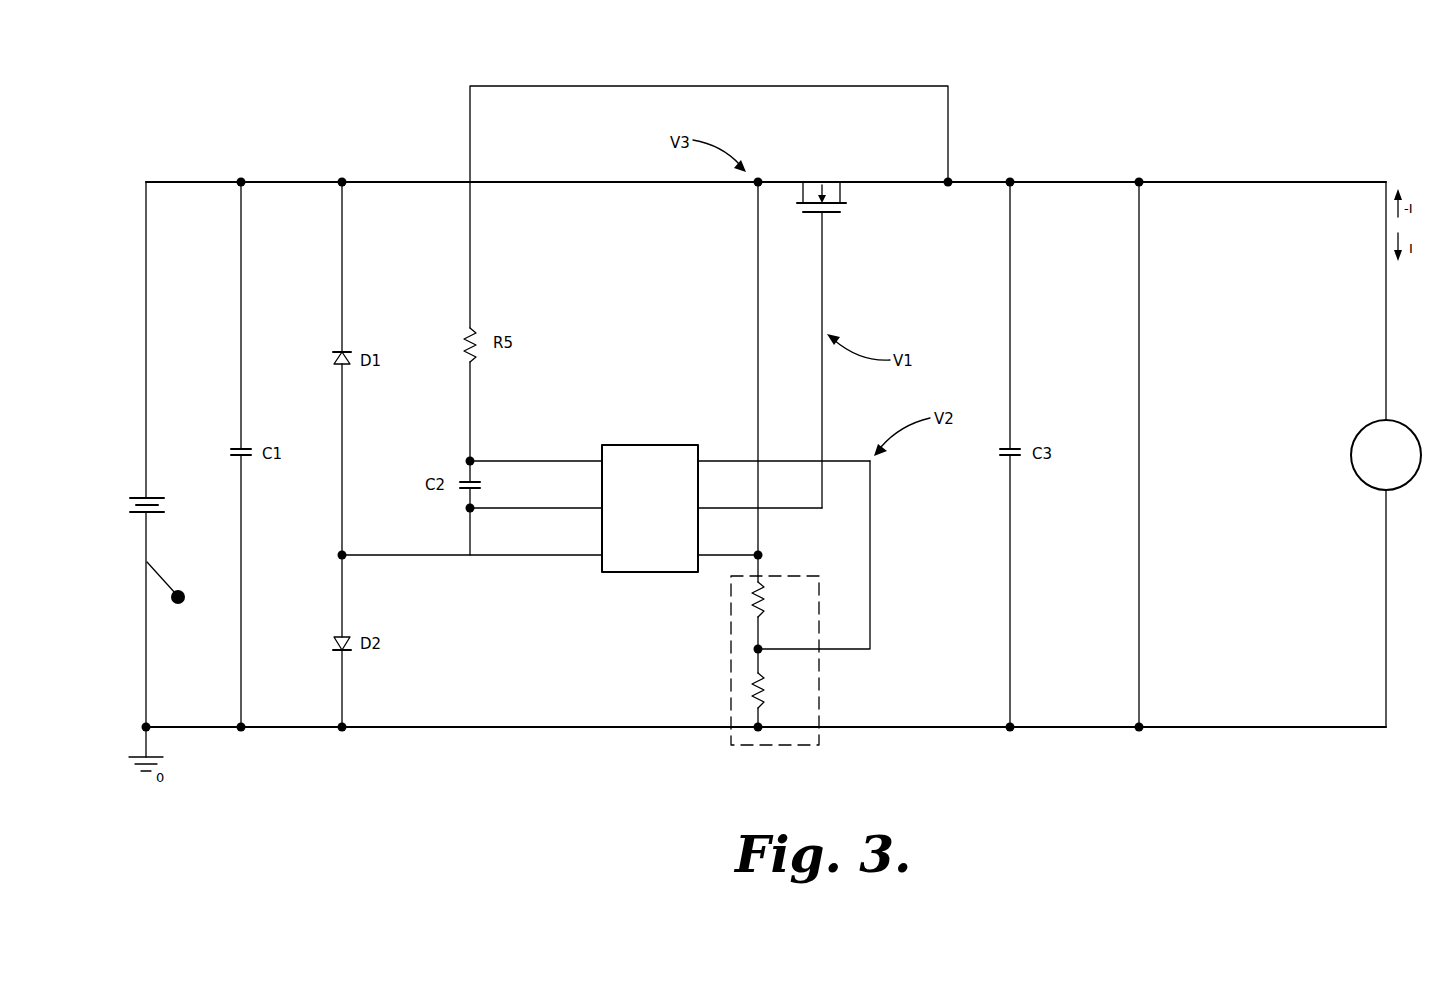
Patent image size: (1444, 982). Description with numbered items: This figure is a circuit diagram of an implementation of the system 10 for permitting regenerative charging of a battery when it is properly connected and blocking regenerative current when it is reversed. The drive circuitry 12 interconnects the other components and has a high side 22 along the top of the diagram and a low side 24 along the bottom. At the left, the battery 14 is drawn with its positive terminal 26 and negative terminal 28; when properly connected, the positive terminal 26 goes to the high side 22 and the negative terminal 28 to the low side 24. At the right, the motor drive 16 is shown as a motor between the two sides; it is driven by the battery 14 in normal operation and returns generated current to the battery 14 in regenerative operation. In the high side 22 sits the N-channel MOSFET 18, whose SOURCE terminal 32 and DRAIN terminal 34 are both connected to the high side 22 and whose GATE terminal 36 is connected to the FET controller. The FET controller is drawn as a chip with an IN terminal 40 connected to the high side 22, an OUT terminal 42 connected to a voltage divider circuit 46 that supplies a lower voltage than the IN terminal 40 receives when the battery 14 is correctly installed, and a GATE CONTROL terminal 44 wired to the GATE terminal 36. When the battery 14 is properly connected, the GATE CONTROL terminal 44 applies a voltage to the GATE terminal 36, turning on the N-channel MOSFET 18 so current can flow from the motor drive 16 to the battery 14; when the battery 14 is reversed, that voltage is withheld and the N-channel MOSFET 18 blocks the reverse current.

The system 10 is at (1236, 62).
The drive circuitry 12 is at (1073, 158).
The battery 14 is at (158, 454).
The motor drive 16 is at (1405, 392).
The N-channel MOSFET 18 is at (649, 424).
The high side 22 is at (189, 170).
The low side 24 is at (205, 742).
The positive terminal 26 is at (154, 484).
The negative terminal 28 is at (155, 524).
The SOURCE terminal 32 is at (793, 192).
The DRAIN terminal 34 is at (858, 191).
The GATE terminal 36 is at (833, 222).
The IN terminal 40 is at (705, 574).
The OUT terminal 42 is at (707, 441).
The GATE CONTROL terminal 44 is at (712, 516).
The voltage divider circuit 46 is at (832, 680).